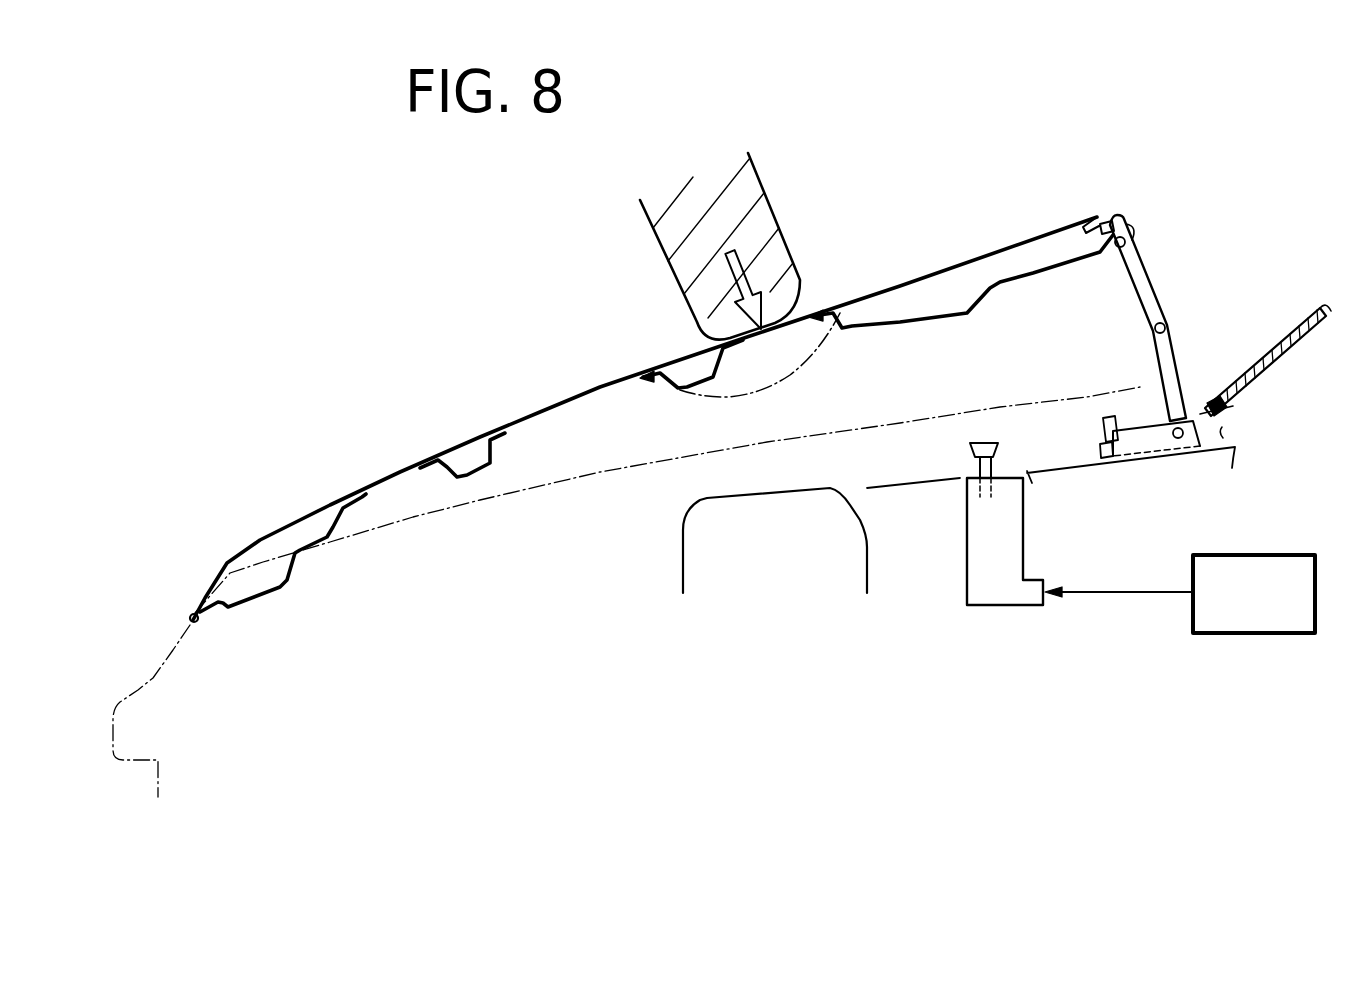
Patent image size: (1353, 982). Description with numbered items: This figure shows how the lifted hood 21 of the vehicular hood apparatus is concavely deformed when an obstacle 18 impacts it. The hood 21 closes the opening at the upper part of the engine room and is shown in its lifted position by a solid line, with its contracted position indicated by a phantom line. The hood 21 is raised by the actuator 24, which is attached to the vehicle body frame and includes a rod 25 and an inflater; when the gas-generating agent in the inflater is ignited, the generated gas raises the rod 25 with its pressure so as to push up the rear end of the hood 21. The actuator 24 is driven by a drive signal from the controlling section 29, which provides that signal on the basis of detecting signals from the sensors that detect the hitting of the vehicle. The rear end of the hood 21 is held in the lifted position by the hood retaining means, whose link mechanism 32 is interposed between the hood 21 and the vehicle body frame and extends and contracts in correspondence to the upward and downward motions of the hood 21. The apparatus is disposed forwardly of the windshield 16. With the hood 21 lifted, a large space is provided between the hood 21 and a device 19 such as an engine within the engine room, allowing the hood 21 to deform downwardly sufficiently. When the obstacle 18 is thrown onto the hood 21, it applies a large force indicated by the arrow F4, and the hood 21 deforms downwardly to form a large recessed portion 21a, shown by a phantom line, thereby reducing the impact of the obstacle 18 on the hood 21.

The windshield 16 is at (1297, 318).
The obstacle 18 is at (757, 170).
The device 19 is at (680, 547).
The hood 21 is at (402, 515).
The recessed portion 21a is at (832, 356).
The actuator 24 is at (967, 557).
The rod 25 is at (980, 468).
The controlling section 29 is at (1260, 633).
The link mechanism 32 is at (1155, 272).
The arrow F4 is at (745, 256).